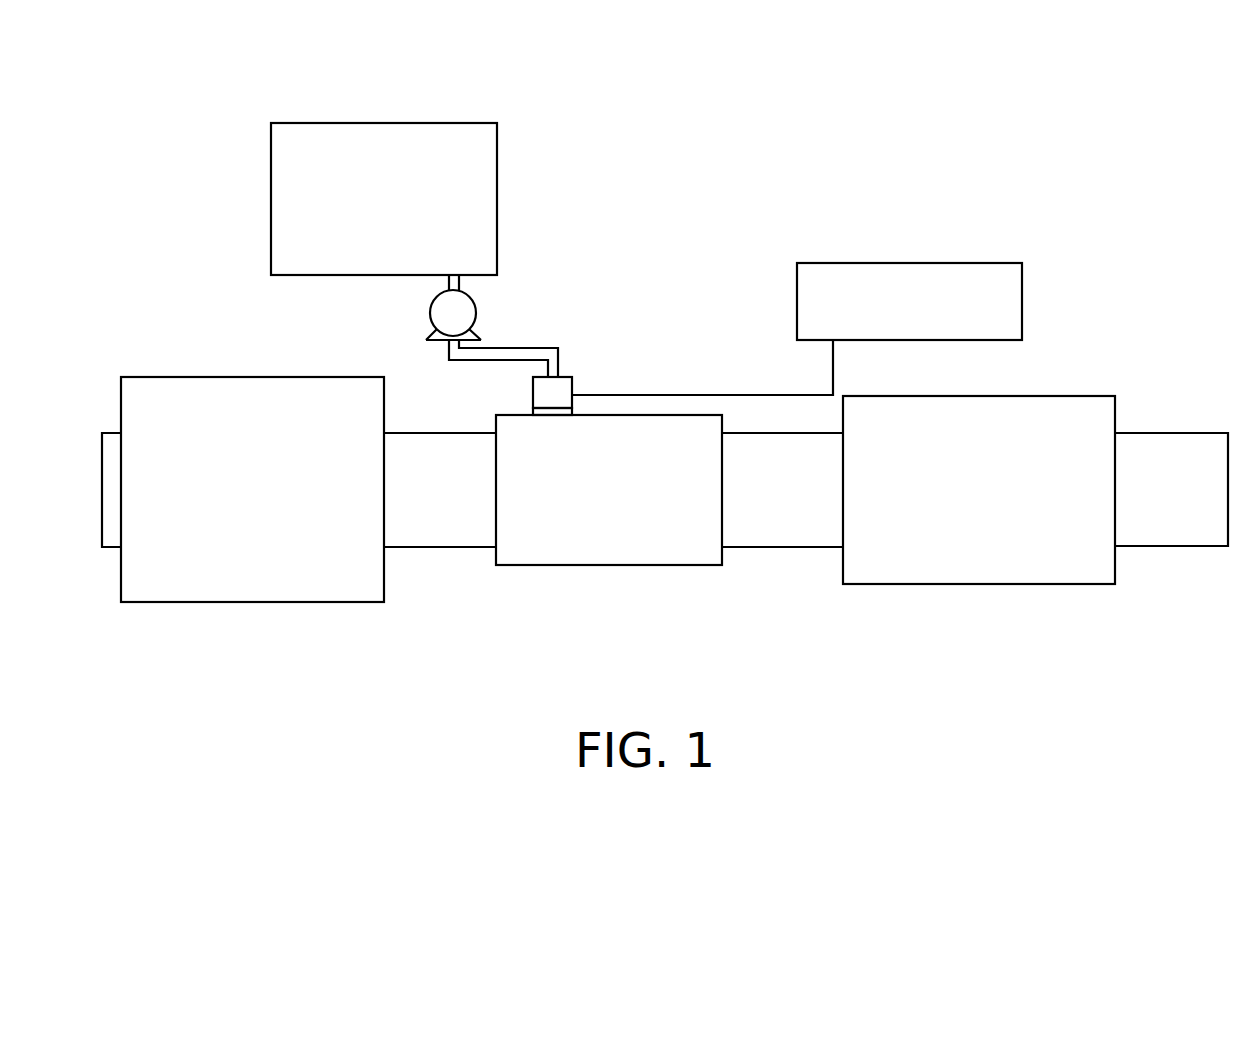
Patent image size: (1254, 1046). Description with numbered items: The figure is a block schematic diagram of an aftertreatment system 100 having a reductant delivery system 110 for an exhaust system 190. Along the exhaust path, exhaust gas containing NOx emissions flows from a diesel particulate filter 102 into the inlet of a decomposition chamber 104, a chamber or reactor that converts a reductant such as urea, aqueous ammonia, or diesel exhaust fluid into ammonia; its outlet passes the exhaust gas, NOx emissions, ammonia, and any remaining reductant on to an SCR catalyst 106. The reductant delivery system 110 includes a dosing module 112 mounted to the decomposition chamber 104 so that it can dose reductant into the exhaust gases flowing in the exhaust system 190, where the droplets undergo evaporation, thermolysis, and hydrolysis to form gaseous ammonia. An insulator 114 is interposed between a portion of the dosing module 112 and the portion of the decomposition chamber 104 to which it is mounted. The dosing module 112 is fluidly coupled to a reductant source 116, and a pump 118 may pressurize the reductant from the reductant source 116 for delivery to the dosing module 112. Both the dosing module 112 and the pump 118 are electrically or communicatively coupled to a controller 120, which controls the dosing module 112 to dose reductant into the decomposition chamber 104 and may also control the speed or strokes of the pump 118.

The aftertreatment system 100 is at (1060, 338).
The diesel particulate filter 102 is at (285, 602).
The decomposition chamber 104 is at (711, 415).
The SCR catalyst 106 is at (987, 584).
The reductant delivery system 110 is at (667, 318).
The dosing module 112 is at (575, 387).
The insulator 114 is at (533, 411).
The reductant source 116 is at (451, 123).
The pump 118 is at (430, 316).
The controller 120 is at (895, 263).
The exhaust system 190 is at (488, 633).